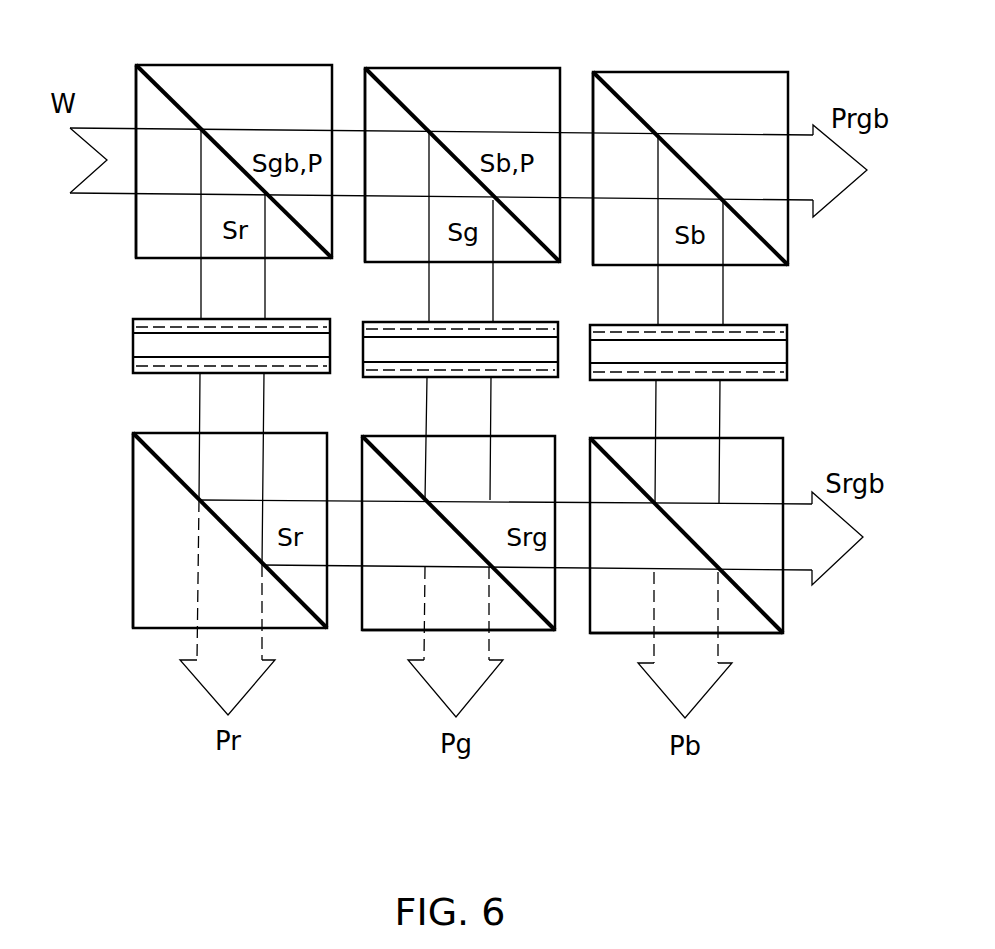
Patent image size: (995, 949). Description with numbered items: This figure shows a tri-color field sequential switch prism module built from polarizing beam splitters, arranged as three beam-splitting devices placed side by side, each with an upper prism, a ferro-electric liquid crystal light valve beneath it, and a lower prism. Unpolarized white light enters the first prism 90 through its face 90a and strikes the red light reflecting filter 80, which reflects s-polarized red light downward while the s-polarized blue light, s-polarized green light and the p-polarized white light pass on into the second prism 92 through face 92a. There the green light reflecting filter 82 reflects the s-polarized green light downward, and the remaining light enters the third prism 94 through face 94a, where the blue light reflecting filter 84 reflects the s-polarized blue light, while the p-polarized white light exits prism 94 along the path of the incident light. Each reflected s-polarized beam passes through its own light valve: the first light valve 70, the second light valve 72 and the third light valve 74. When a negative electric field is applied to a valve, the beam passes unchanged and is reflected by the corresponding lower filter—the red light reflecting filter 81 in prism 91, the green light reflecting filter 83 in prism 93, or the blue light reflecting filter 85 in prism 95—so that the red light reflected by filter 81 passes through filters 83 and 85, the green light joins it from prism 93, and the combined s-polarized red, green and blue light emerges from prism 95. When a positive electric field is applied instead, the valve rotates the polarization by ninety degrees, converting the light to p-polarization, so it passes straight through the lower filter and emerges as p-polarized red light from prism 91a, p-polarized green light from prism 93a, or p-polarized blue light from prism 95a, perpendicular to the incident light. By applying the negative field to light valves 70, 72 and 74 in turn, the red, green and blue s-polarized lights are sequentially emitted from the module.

The first polarizing beam-splitting component 80 is at (177, 100).
The prism 90 is at (272, 107).
The prism 90a is at (153, 218).
The prism 92a is at (380, 108).
The third polarizing beam-splitting component 82 is at (405, 100).
The prism 92 is at (500, 108).
The prism 94a is at (612, 110).
The fifth polarizing beam-splitting component 84 is at (633, 110).
The prism 94 is at (730, 110).
The first light valve 70 is at (133, 342).
The second light valve 72 is at (365, 373).
The third light valve 74 is at (788, 357).
The prism 91a is at (150, 568).
The second polarizing beam-splitting component 81 is at (290, 597).
The prism 91 is at (312, 590).
The prism 93a is at (383, 620).
The fourth polarizing beam-splitting component 83 is at (518, 597).
The prism 93 is at (540, 593).
The prism 95a is at (617, 620).
The sixth polarizing beam-splitting component 85 is at (743, 603).
The prism 95 is at (767, 595).